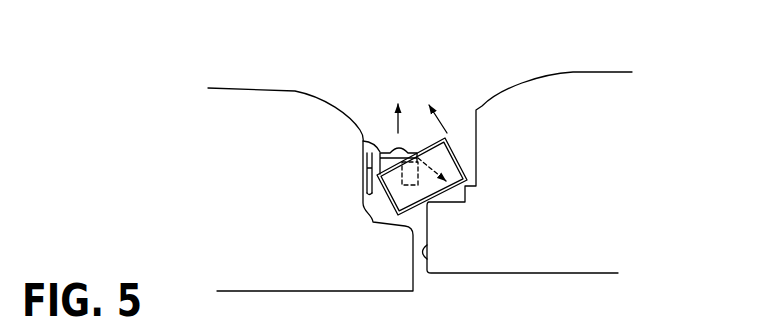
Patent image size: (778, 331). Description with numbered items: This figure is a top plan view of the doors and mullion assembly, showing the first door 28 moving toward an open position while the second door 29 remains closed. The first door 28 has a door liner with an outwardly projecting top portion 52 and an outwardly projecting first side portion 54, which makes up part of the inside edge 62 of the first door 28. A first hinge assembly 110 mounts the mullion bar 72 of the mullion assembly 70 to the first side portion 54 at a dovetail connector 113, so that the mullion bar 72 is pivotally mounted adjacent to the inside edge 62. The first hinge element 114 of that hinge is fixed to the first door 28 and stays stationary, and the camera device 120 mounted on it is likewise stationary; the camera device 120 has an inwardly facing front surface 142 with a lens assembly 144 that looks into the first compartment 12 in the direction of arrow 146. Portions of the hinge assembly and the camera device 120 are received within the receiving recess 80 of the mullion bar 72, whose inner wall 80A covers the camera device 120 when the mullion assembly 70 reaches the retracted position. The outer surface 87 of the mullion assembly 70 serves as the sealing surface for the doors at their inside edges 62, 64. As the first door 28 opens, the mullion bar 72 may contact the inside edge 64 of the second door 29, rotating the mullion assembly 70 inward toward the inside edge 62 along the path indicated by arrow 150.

The first compartment 12 is at (425, 31).
The first door 28 is at (236, 78).
The second door 29 is at (641, 58).
The outwardly projecting top portion 52 is at (313, 124).
The outwardly projecting first side portion 54 is at (370, 130).
The inside edge 62 is at (420, 270).
The inside edge 64 is at (453, 273).
The mullion assembly 70 is at (483, 106).
The mullion bar 72 is at (470, 166).
The receiving recess 80 is at (471, 190).
The inner wall 80A is at (423, 156).
The outer surface 87 is at (410, 229).
The first hinge assembly 110 is at (380, 131).
The dovetail connector 113 is at (365, 188).
The first hinge element 114 is at (361, 155).
The camera device 120 is at (433, 94).
The front surface 142 is at (360, 142).
The lens assembly 144 is at (393, 147).
The arrow 146 is at (413, 147).
The arrow 150 is at (454, 124).